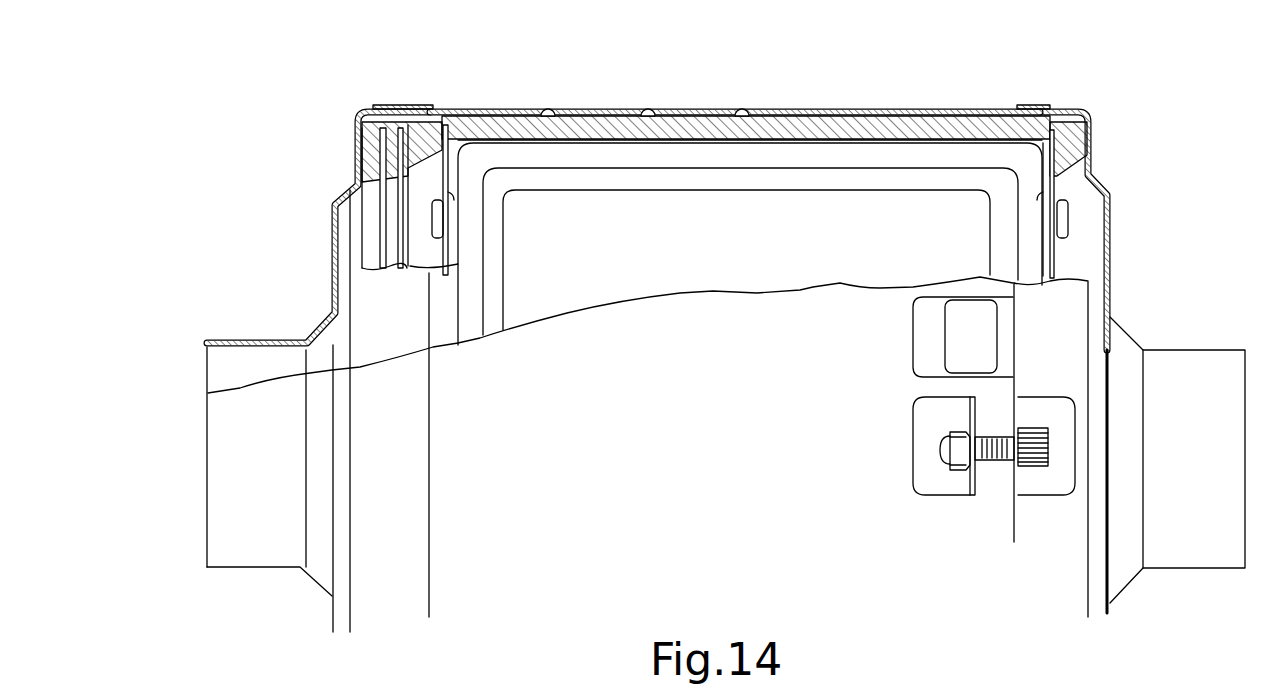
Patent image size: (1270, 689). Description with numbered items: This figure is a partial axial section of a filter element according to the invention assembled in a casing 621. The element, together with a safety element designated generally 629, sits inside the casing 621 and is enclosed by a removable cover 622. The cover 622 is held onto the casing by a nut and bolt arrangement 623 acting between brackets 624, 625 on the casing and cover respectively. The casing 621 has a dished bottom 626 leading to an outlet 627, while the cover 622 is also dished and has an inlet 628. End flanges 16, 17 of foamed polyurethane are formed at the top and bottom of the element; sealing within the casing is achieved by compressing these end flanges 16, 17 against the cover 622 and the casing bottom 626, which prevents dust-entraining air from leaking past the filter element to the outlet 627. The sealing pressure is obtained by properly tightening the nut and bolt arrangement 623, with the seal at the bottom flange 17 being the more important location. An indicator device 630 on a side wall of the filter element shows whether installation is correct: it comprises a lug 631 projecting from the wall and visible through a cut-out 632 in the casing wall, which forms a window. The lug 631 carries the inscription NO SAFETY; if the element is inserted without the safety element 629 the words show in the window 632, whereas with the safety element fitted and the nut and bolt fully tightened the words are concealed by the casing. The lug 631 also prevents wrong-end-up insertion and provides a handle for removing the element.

The end flange 16 is at (1073, 130).
The end flange 17 is at (418, 130).
The casing 621 is at (570, 120).
The removable cover 622 is at (1097, 130).
The nut and bolt arrangement 623 is at (996, 462).
The bracket 624 is at (920, 446).
The bracket 625 is at (1052, 487).
The dished bottom 626 is at (338, 188).
The outlet 627 is at (318, 328).
The inlet 628 is at (1187, 350).
The safety element 629 is at (360, 128).
The indicator device 630 is at (900, 331).
The lug 631 is at (972, 313).
The cut-out 632 is at (915, 297).